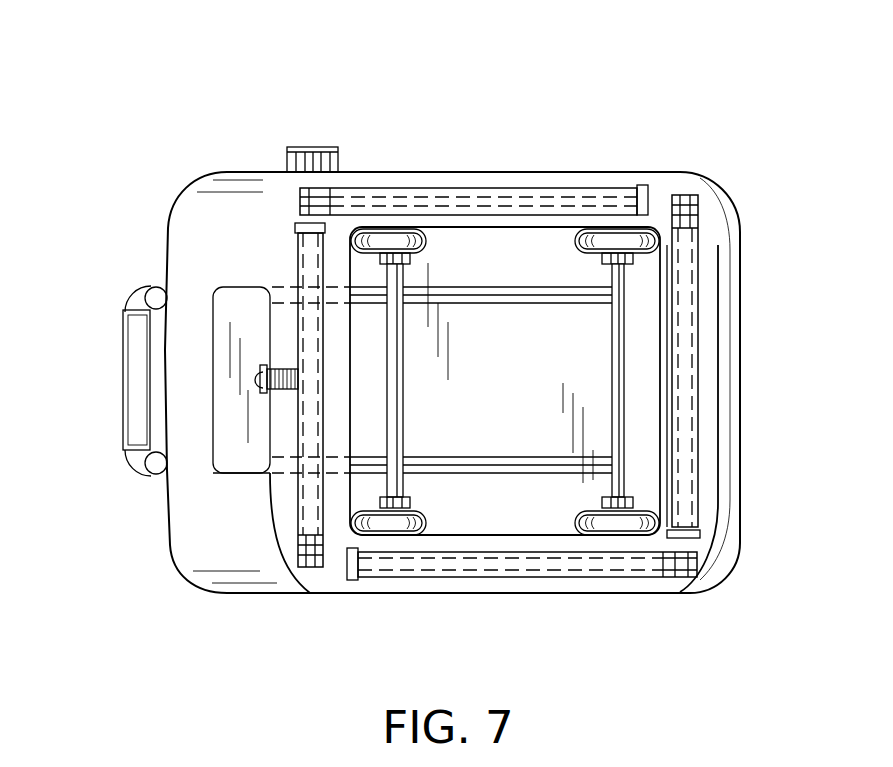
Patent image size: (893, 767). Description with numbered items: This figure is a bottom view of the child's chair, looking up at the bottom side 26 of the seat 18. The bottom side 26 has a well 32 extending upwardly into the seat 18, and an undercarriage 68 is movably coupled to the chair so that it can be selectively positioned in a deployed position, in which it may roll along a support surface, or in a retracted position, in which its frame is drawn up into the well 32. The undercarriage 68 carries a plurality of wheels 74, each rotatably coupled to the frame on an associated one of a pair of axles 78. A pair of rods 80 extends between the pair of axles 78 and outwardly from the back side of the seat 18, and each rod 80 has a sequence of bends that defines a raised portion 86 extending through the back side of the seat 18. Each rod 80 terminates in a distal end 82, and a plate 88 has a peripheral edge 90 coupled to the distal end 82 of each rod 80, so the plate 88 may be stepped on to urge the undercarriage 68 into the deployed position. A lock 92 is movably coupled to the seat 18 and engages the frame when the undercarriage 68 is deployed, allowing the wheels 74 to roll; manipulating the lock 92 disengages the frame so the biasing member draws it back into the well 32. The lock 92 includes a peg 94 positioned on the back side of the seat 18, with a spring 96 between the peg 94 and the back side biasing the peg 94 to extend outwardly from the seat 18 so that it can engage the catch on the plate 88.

The seat 18 is at (745, 378).
The bottom side 26 is at (660, 190).
The well 32 is at (517, 533).
The undercarriage 68 is at (483, 228).
The wheels 74 is at (370, 244).
The axles 78 is at (405, 318).
The rods 80 is at (533, 290).
The distal end 82 is at (295, 338).
The raised portion 86 is at (288, 473).
The plate 88 is at (270, 472).
The peripheral edge 90 is at (167, 250).
The lock 92 is at (238, 428).
The peg 94 is at (258, 381).
The spring 96 is at (288, 364).